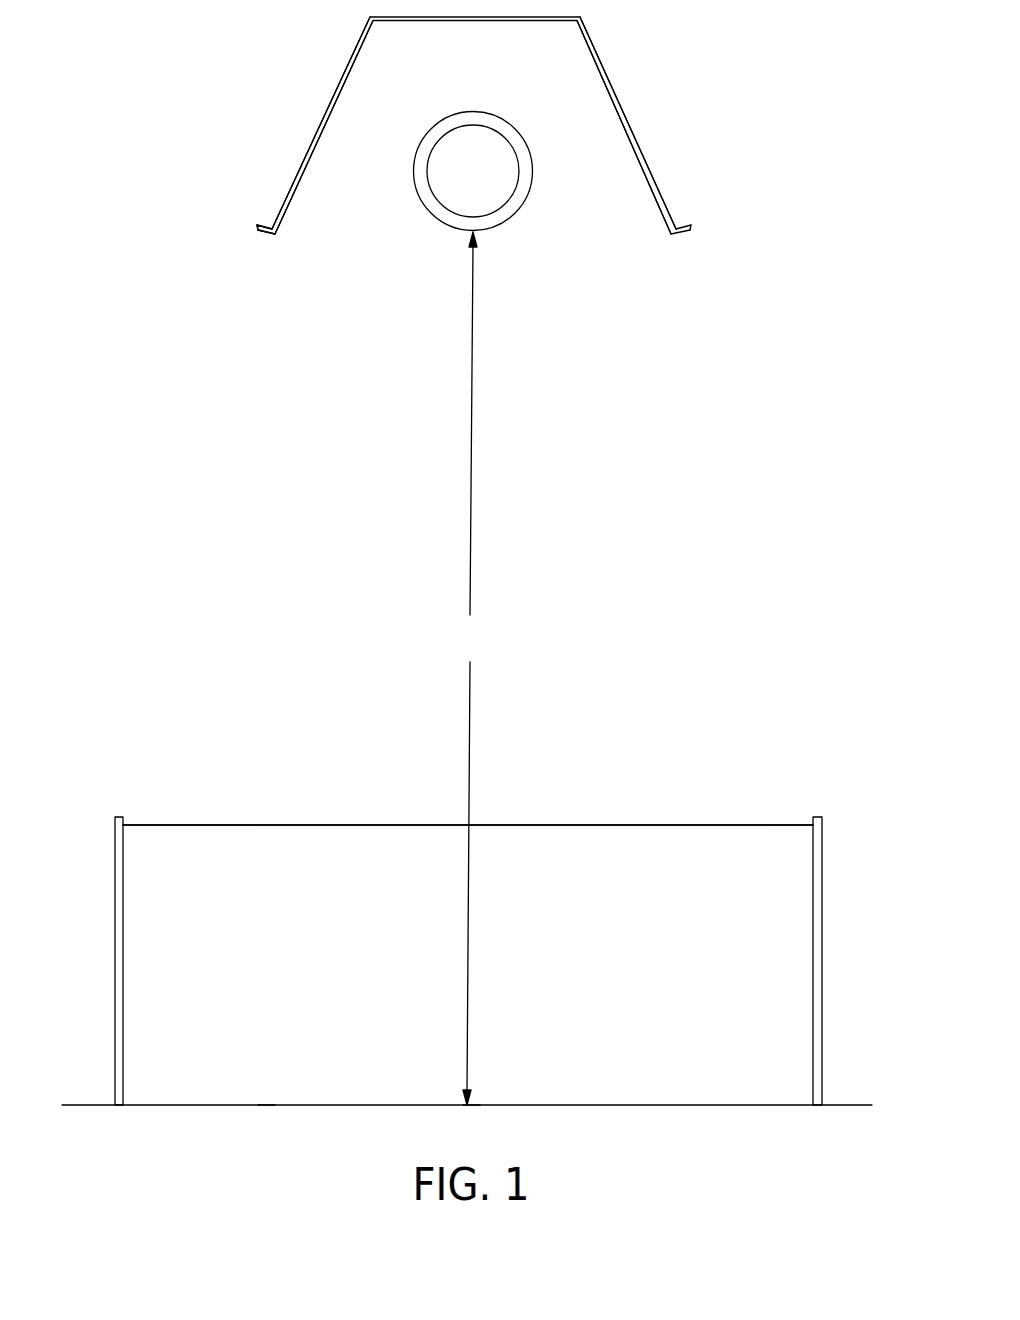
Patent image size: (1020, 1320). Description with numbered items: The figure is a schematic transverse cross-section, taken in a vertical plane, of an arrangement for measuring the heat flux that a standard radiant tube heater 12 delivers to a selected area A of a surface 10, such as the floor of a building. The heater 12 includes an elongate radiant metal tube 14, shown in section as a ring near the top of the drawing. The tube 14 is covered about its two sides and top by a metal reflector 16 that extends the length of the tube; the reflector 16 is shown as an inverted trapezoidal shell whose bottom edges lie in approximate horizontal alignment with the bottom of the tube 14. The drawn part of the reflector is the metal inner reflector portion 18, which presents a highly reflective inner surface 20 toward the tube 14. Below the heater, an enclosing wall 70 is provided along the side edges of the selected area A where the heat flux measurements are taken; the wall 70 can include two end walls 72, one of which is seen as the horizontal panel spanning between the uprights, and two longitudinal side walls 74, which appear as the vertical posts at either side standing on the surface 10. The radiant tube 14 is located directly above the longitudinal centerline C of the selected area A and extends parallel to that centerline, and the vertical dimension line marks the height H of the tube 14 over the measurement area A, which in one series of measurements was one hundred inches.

The surface 10 is at (662, 1105).
The radiant tube heater 12 is at (585, 112).
The radiant metal tube 14 is at (517, 210).
The metal reflector 16 is at (653, 173).
The inner reflector portion 18 is at (300, 163).
The inner surface 20 is at (298, 188).
The enclosing wall 70 is at (282, 951).
The end wall 72 is at (260, 857).
The longitudinal side wall 74 is at (115, 965).
The selected area A is at (258, 1105).
The longitudinal centerline C is at (473, 1105).
The height H is at (472, 668).